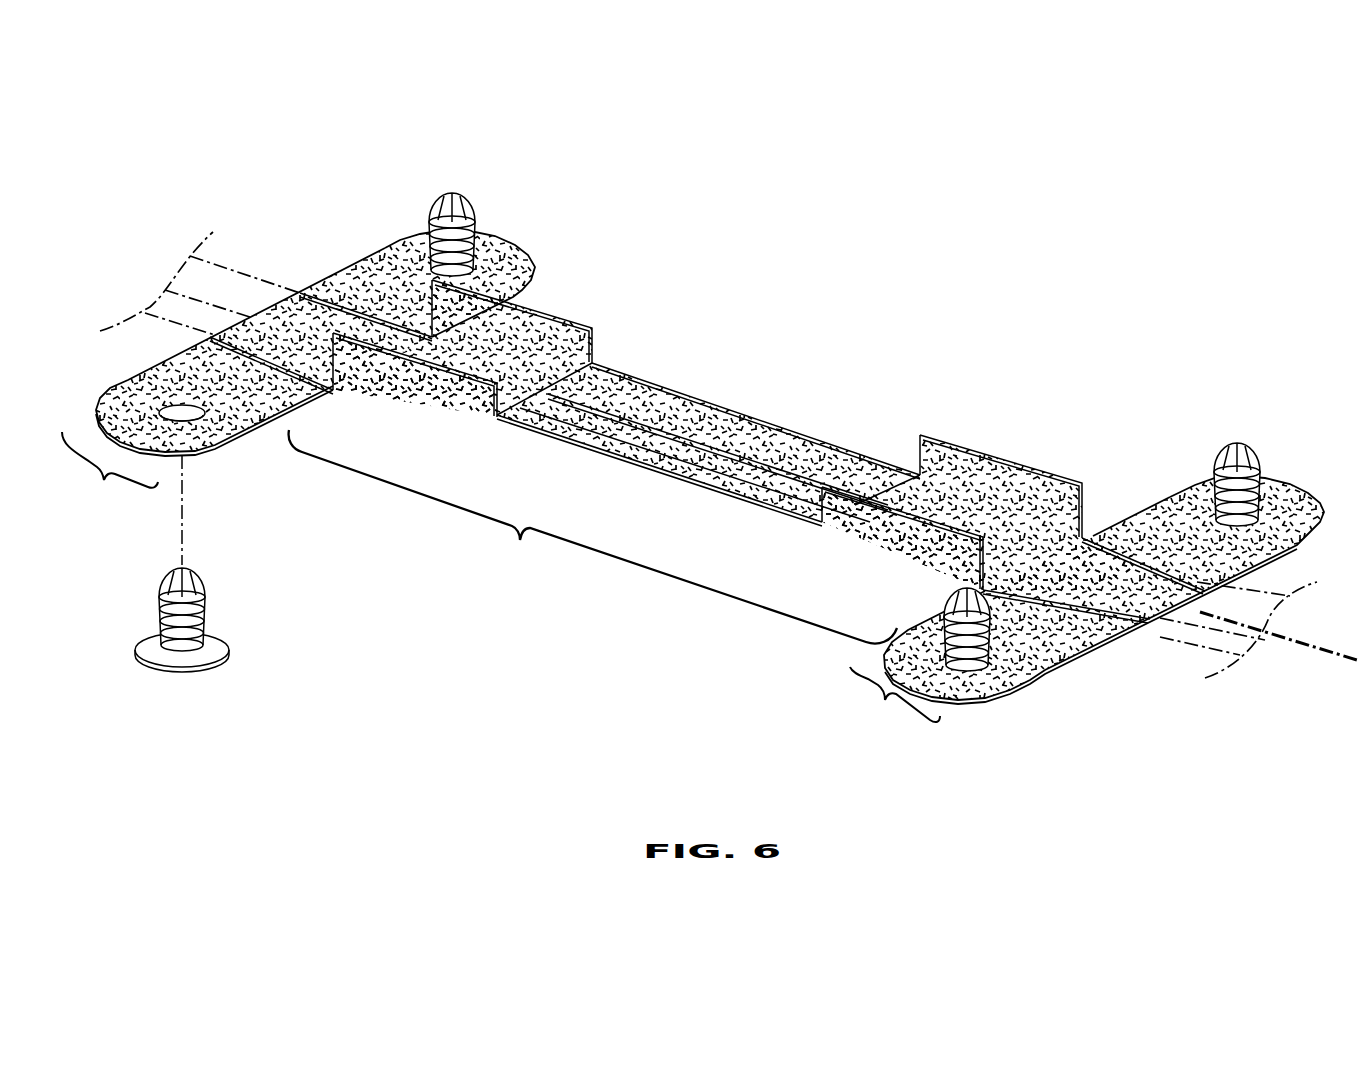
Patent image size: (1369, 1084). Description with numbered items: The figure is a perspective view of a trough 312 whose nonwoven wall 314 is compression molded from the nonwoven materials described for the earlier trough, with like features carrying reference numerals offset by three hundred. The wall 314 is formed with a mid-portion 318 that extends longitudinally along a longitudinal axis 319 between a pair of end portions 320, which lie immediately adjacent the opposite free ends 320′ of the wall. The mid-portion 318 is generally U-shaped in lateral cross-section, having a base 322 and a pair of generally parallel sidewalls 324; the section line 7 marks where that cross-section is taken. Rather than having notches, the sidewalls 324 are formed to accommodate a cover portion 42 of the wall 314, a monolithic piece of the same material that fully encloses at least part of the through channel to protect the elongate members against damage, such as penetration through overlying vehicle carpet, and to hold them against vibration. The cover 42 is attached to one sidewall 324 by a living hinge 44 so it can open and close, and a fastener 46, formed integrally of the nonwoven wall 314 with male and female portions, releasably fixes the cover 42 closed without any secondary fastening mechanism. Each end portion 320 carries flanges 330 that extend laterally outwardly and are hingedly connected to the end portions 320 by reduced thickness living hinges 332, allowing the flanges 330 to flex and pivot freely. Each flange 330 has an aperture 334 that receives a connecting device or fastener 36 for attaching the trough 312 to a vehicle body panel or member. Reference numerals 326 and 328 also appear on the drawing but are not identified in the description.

The fastener 36 is at (714, 411).
The cover portion 42 is at (718, 421).
The living hinge 44 is at (683, 429).
The fastener 46 is at (695, 476).
The trough 312 is at (967, 307).
The nonwoven wall 314 is at (1340, 458).
The mid-portion 318 is at (593, 536).
The longitudinal axis 319 is at (1258, 642).
The end portions 320 is at (501, 583).
The free ends 320′ is at (842, 387).
The base 322 is at (805, 460).
The sidewalls 324 is at (707, 456).
The surface 326 is at (904, 415).
The second flange 328 is at (707, 429).
The flanges 330 is at (512, 242).
The living hinges 332 is at (707, 470).
The aperture 334 is at (162, 379).
The section line 7 is at (663, 380).